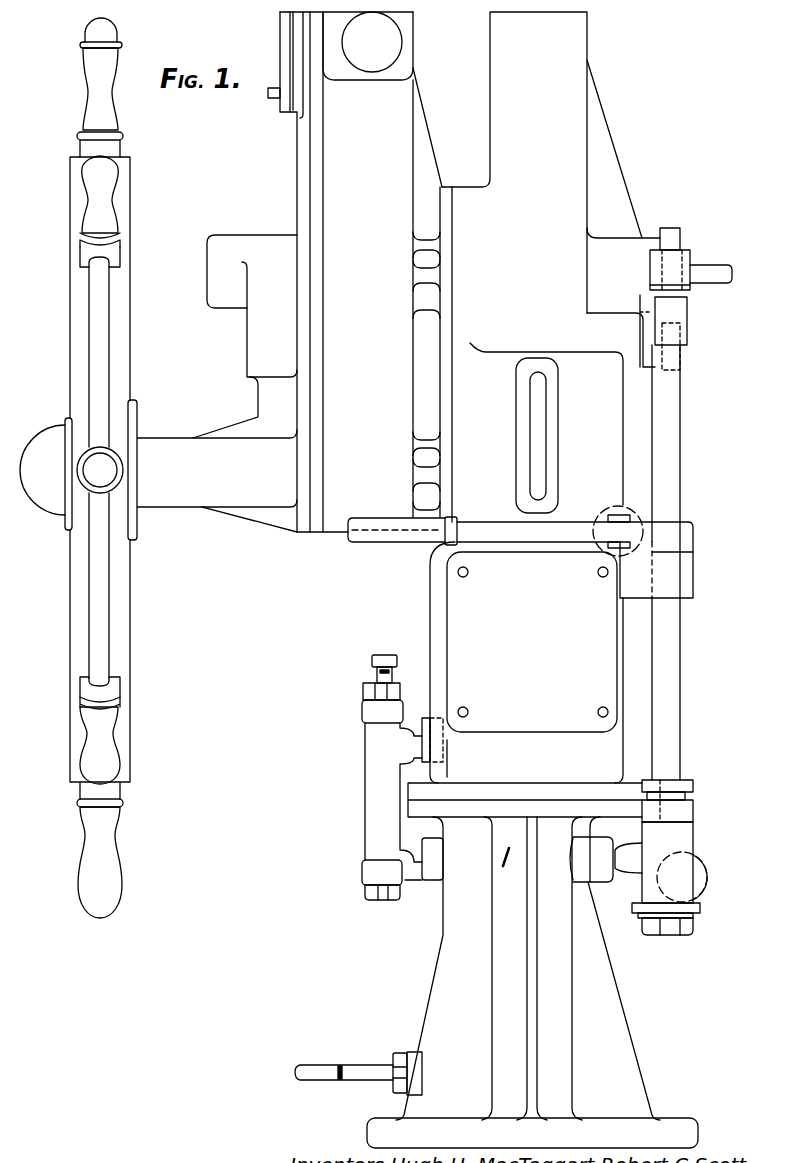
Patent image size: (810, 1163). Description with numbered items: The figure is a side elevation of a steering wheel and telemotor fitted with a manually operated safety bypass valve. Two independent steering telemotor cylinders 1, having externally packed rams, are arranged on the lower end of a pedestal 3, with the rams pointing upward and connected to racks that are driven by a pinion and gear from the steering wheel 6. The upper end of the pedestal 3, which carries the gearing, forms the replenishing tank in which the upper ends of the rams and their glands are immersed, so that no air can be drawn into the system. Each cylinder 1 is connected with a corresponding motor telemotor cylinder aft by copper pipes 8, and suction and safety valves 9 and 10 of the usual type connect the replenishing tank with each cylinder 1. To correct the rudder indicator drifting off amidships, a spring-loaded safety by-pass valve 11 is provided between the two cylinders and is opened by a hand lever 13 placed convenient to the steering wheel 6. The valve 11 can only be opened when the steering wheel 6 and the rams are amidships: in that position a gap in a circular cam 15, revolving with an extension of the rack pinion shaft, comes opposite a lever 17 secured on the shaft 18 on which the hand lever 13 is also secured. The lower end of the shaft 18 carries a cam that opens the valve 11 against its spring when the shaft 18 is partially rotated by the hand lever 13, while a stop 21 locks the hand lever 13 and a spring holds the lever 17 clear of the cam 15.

The steering telemotor cylinder 1 is at (532, 965).
The pedestal 3 is at (437, 621).
The steering wheel 6 is at (118, 350).
The copper pipe 8 is at (323, 1075).
The suction valve 9 is at (365, 697).
The safety valve 10 is at (368, 667).
The safety by-pass valve 11 is at (661, 857).
The hand lever 13 is at (505, 532).
The circular cam 15 is at (680, 233).
The lever 17 is at (733, 268).
The shaft 18 is at (675, 448).
The stop 21 is at (618, 508).